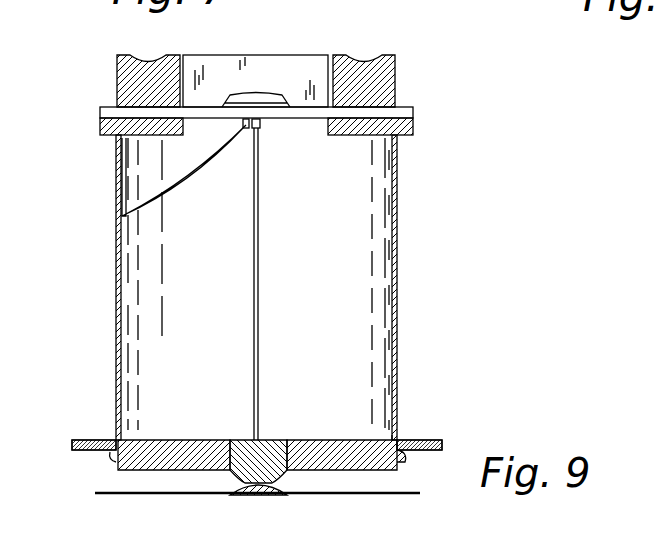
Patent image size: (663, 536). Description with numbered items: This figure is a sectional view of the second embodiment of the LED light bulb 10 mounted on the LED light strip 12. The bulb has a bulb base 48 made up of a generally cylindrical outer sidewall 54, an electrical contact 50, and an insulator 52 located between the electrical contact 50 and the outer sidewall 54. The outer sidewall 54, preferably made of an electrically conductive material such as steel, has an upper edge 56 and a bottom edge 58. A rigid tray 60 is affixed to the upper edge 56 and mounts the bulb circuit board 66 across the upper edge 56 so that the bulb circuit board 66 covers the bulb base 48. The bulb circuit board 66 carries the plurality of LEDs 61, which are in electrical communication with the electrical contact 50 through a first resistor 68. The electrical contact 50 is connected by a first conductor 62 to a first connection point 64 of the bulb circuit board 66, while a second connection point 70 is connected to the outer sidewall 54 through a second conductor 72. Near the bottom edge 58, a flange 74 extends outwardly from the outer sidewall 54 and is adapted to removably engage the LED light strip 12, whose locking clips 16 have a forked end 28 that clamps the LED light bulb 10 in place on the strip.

The LED light bulb 10 is at (435, 222).
The LED light strip 12 is at (98, 492).
The locking clips 16 is at (442, 443).
The forked end 28 is at (257, 445).
The bulb base 48 is at (70, 258).
The electrical contact 50 is at (274, 440).
The insulator 52 is at (190, 440).
The outer sidewall 54 is at (116, 302).
The upper edge 56 is at (397, 152).
The bottom edge 58 is at (397, 425).
The rigid tray 60 is at (413, 125).
The LEDs 61 is at (117, 82).
The first conductor 62 is at (258, 213).
The first connection point 64 is at (260, 128).
The bulb circuit board 66 is at (263, 65).
The first resistor 68 is at (228, 98).
The second connection point 70 is at (244, 128).
The second conductor 72 is at (178, 192).
The flange 74 is at (406, 457).